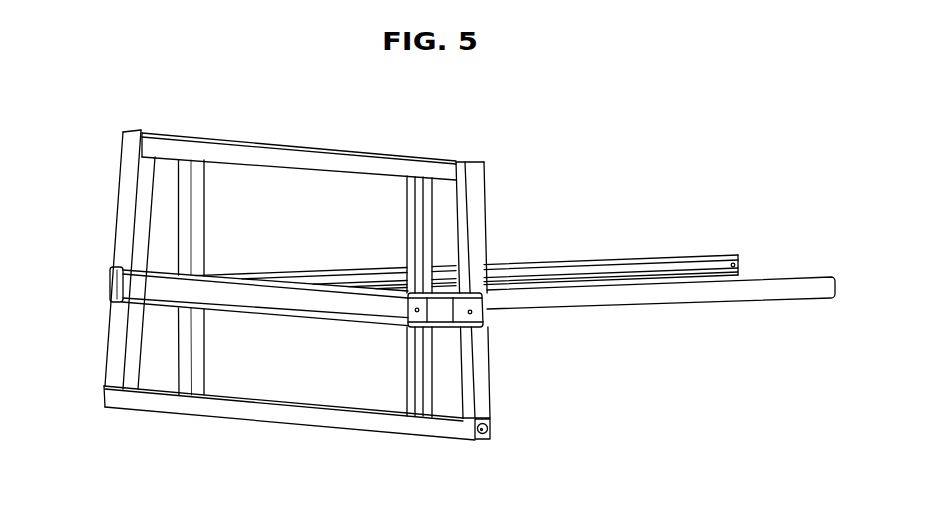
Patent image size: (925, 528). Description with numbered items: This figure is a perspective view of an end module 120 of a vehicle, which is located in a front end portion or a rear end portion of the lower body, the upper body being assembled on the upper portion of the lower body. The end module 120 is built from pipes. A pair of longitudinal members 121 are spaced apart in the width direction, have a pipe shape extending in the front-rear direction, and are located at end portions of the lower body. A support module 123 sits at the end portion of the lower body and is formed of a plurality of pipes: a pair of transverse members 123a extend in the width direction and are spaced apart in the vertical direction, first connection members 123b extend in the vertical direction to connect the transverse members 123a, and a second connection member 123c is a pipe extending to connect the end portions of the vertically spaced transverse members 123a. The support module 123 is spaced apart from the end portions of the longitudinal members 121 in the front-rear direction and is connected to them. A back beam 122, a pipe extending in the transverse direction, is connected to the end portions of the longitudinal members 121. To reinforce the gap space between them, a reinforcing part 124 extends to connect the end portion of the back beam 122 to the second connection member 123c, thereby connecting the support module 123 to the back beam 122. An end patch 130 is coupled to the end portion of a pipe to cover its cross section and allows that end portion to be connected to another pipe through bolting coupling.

The end module 120 is at (593, 107).
The longitudinal member 121 is at (662, 297).
The back beam 122 is at (273, 298).
The support module 123 is at (186, 424).
The transverse member 123a is at (288, 155).
The first connection member 123b is at (185, 193).
The second connection member 123c is at (125, 229).
The reinforcing part 124 is at (445, 313).
The end patch 130 is at (490, 432).